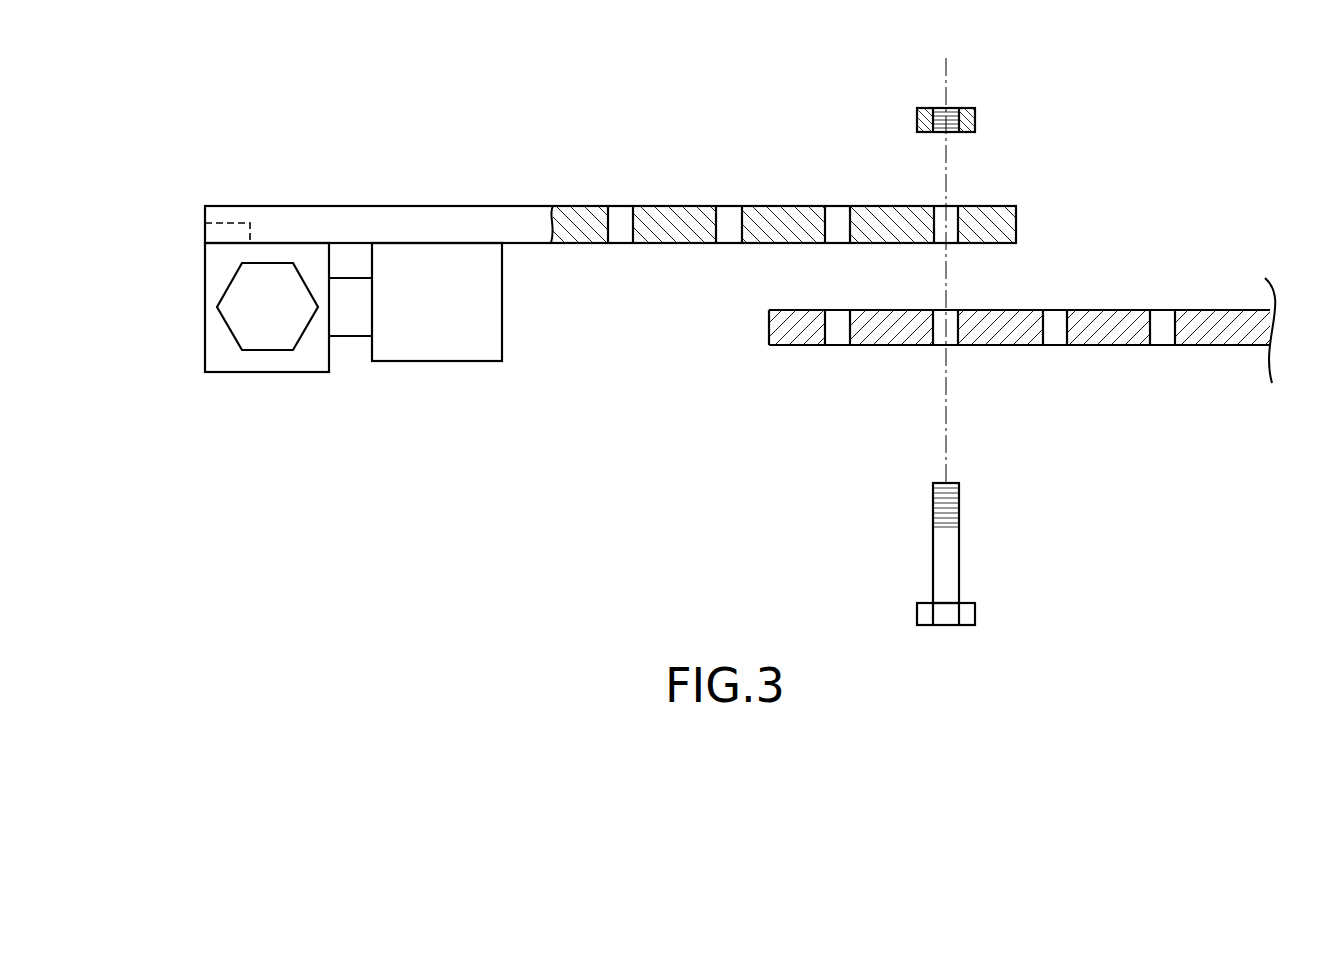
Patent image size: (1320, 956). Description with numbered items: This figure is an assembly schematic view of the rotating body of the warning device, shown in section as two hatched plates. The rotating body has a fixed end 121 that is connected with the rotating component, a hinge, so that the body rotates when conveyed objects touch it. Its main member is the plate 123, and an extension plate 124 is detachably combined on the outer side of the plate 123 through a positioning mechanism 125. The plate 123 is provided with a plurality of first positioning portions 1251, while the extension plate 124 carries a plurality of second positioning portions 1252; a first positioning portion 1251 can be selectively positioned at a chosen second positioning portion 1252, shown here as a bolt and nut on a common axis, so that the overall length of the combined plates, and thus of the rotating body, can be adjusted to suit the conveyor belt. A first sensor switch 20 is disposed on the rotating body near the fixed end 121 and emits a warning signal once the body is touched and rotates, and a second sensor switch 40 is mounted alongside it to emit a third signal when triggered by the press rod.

The first sensor switch 20 is at (223, 218).
The second sensor switch 40 is at (427, 325).
The fixed end 121 is at (655, 170).
The plate 123 is at (669, 223).
The extension plate 124 is at (1213, 330).
The positioning mechanism 125 is at (951, 358).
The first positioning portion 1251 is at (952, 338).
The second positioning portion 1252 is at (952, 215).